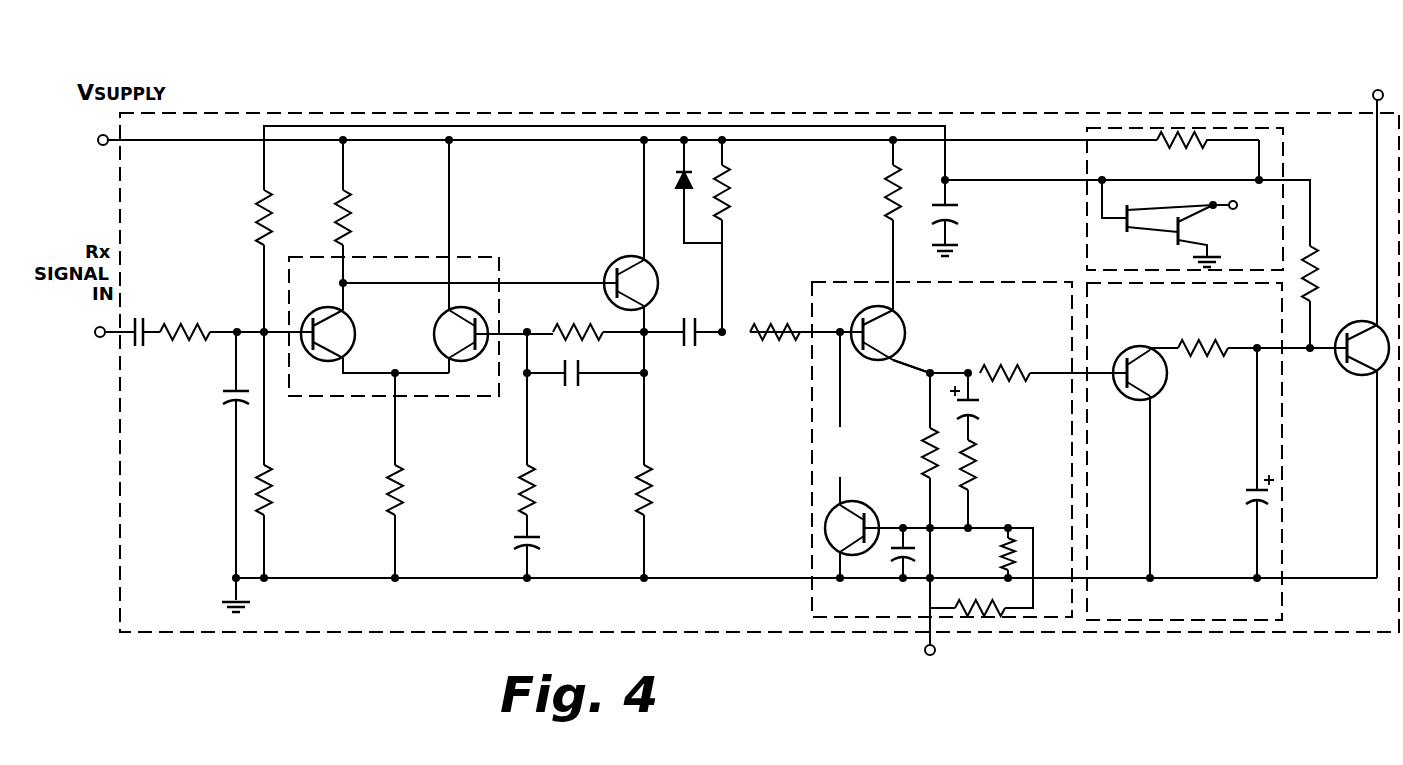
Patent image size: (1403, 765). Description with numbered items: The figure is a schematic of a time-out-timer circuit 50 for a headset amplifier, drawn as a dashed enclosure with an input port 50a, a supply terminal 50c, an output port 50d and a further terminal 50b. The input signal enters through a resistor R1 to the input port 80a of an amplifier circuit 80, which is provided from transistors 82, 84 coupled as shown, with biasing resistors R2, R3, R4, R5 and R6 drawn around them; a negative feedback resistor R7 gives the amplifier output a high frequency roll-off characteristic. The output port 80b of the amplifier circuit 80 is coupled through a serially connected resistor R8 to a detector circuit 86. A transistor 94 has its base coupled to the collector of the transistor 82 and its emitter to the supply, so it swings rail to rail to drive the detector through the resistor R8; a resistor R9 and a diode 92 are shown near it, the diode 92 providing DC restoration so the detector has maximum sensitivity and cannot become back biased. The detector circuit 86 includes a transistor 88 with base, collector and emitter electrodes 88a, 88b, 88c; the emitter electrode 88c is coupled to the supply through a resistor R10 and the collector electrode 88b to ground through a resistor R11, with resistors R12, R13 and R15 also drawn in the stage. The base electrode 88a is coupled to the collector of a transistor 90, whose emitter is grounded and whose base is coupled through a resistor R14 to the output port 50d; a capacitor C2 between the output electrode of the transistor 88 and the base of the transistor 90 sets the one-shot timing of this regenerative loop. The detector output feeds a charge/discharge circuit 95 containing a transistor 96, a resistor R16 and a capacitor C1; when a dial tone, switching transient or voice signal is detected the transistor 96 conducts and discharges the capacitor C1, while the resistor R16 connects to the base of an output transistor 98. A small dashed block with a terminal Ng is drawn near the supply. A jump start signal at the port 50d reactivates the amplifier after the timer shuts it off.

The time-out-timer circuit 50 is at (315, 106).
The input port of the time-out-timer circuit 50a is at (108, 330).
The output terminal 50b is at (1372, 100).
The supply voltage terminal 50c is at (106, 138).
The output port of the time-out-timer circuit 50d is at (936, 648).
The amplifier circuit 80 is at (470, 257).
The input port of the amplifier circuit 80a is at (249, 330).
The output port of the amplifier circuit 80b is at (517, 331).
The transistor 82 is at (362, 318).
The transistor 84 is at (430, 344).
The detector circuit 86 is at (850, 282).
The transistor 88 is at (905, 318).
The base electrode 88a is at (846, 345).
The collector electrode 88b is at (916, 370).
The emitter electrode 88c is at (890, 243).
The transistor 90 is at (862, 506).
The diode 92 is at (673, 190).
The transistor 94 is at (609, 253).
The charge/discharge circuit 95 is at (1283, 608).
The transistor 96 is at (1172, 396).
The output transistor 98 is at (1356, 243).
The resistor R1 is at (188, 344).
The resistor R2 is at (258, 208).
The resistor R3 is at (272, 490).
The resistor R4 is at (352, 204).
The resistor R5 is at (404, 488).
The resistor R6 is at (536, 490).
The negative feedback resistor R7 is at (578, 318).
The resistor R8 is at (780, 340).
The resistor R9 is at (731, 180).
The resistor R10 is at (884, 190).
The resistor R11 is at (920, 462).
The resistor R12 is at (980, 461).
The resistor R13 is at (999, 556).
The resistor R14 is at (953, 606).
The resistor R15 is at (1005, 355).
The resistor R16 is at (1204, 340).
The capacitor C1 is at (1242, 494).
The capacitor C2 is at (984, 405).
The gate terminal Ng is at (1185, 199).